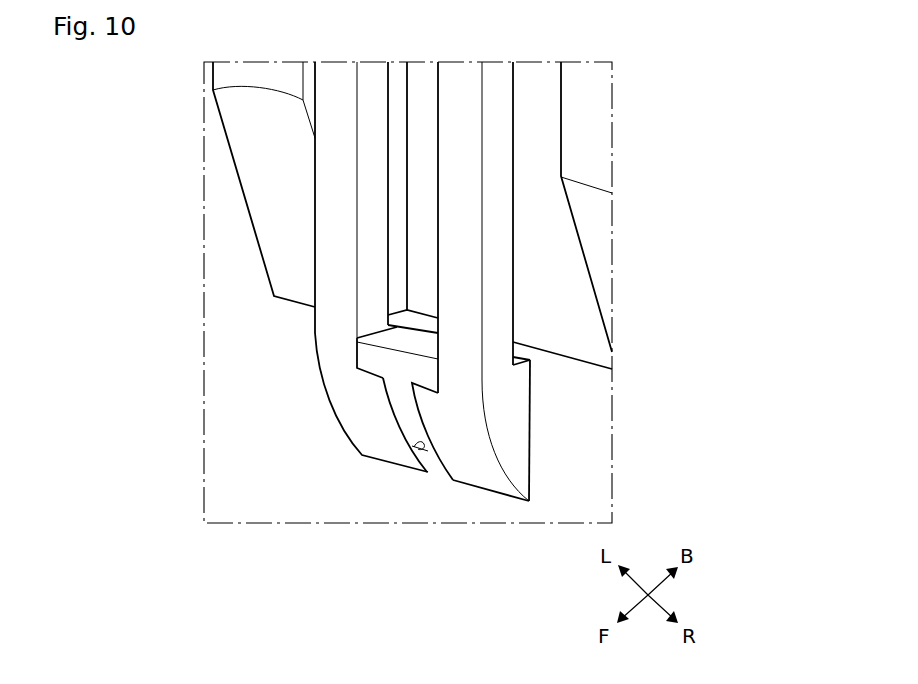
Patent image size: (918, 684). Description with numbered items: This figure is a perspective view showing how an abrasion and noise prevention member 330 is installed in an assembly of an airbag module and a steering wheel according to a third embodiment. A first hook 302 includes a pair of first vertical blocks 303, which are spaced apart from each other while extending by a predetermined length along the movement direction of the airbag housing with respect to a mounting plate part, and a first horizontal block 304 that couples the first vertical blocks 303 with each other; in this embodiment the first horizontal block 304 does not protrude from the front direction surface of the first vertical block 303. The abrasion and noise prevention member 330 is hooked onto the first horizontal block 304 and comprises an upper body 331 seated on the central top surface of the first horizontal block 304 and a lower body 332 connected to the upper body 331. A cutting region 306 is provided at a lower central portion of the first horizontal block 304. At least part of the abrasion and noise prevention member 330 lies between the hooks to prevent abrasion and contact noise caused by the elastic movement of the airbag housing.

The first hook 302 is at (485, 281).
The first vertical blocks 303 is at (488, 190).
The first horizontal block 304 is at (463, 442).
The abrasion and noise prevention member 330 is at (261, 395).
The upper body 331 is at (377, 356).
The lower body 332 is at (408, 423).
The cutting region 306 is at (418, 442).